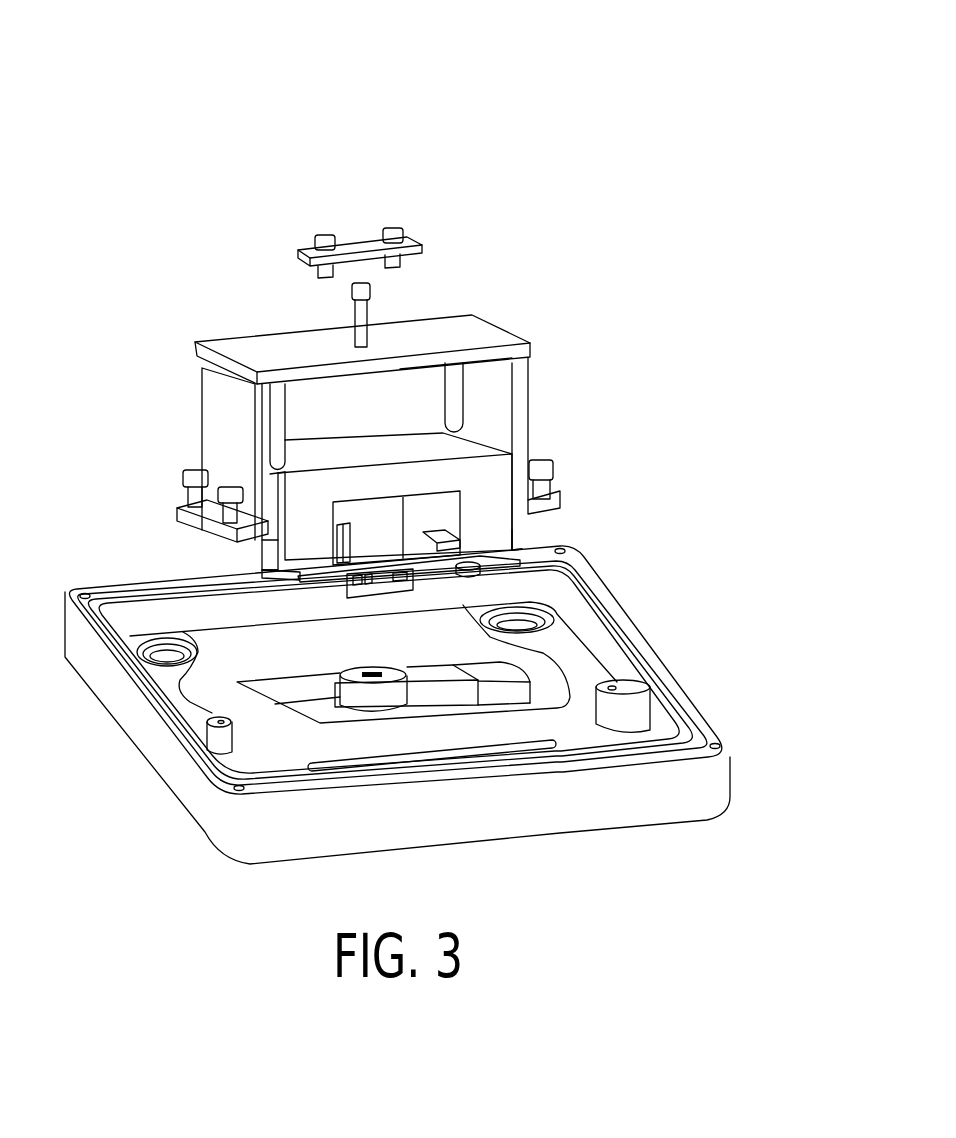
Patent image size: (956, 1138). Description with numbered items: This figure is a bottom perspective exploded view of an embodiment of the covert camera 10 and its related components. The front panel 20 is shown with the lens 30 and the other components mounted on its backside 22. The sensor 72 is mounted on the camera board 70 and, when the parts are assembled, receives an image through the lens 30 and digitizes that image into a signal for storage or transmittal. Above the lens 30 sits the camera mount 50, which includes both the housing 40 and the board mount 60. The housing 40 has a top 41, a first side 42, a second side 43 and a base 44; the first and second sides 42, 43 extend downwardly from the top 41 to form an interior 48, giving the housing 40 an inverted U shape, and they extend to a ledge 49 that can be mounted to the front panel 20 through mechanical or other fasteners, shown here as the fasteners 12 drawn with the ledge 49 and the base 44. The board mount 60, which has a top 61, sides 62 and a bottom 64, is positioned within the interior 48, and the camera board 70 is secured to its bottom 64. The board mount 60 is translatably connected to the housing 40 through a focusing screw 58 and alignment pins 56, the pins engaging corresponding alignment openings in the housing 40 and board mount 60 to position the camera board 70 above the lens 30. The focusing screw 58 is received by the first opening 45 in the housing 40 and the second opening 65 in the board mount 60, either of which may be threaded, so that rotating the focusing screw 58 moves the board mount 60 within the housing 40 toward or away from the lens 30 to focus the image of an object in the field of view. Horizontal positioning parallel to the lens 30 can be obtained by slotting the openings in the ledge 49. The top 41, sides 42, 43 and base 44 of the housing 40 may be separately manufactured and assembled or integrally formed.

The camera 10 is at (108, 90).
The fasteners 12 is at (392, 228).
The front panel 20 is at (170, 838).
The backside 22 is at (207, 710).
The lens 30 is at (360, 683).
The housing 40 is at (214, 358).
The top 41 is at (270, 347).
The first side 42 is at (220, 380).
The second side 43 is at (502, 408).
The base 44 is at (155, 526).
The first opening 45 is at (378, 347).
The interior 48 is at (422, 407).
The ledge 49 is at (235, 530).
The camera mount 50 is at (214, 258).
The alignment pins 56 is at (465, 388).
The focusing screw 58 is at (358, 330).
The board mount 60 is at (280, 495).
The top 61 is at (313, 457).
The sides 62 is at (282, 549).
The bottom 64 is at (267, 573).
The second opening 65 is at (360, 453).
The camera board 70 is at (510, 562).
The sensor 72 is at (373, 587).